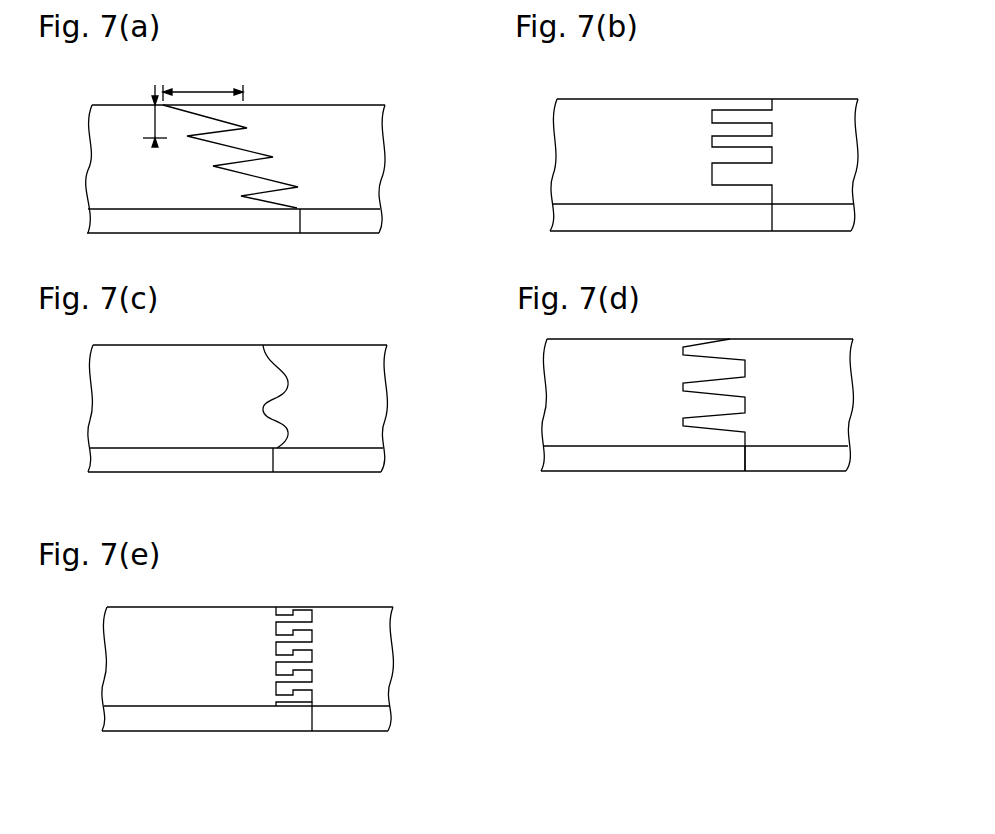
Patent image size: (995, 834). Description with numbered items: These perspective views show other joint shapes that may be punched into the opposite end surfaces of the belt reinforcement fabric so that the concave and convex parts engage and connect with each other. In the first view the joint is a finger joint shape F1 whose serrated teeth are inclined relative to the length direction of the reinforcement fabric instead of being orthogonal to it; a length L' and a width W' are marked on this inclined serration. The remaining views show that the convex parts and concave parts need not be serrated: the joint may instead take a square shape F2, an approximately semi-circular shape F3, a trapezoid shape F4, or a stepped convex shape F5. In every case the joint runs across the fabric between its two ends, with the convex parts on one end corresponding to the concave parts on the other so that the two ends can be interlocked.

The inclined finger joint shape F1 is at (249, 202).
The square finger joint shape F2 is at (726, 188).
The approximately semi-circular finger joint shape F3 is at (293, 440).
The trapezoid finger joint shape F4 is at (712, 432).
The convex finger joint shape F5 is at (272, 698).
The pitch length of perforation L' is at (203, 78).
The width of perforation W' is at (136, 130).